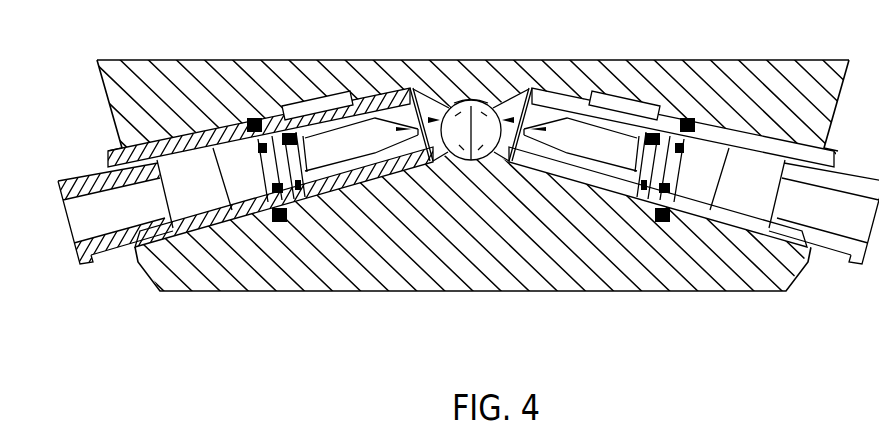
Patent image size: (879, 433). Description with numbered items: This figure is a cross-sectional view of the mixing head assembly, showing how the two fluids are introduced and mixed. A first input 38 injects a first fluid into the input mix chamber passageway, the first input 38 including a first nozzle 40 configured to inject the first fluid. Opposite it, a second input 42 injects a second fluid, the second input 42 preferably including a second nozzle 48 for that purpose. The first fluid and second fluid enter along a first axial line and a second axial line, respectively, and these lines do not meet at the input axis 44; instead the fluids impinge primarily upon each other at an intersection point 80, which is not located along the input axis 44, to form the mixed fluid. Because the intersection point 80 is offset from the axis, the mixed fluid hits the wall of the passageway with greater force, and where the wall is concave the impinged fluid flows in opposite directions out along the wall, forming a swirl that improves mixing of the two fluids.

The first input 38 is at (443, 107).
The first nozzle 40 is at (371, 193).
The second input 42 is at (513, 122).
The input axis 44 is at (471, 135).
The second nozzle 48 is at (575, 197).
The intersection point 80 is at (468, 100).